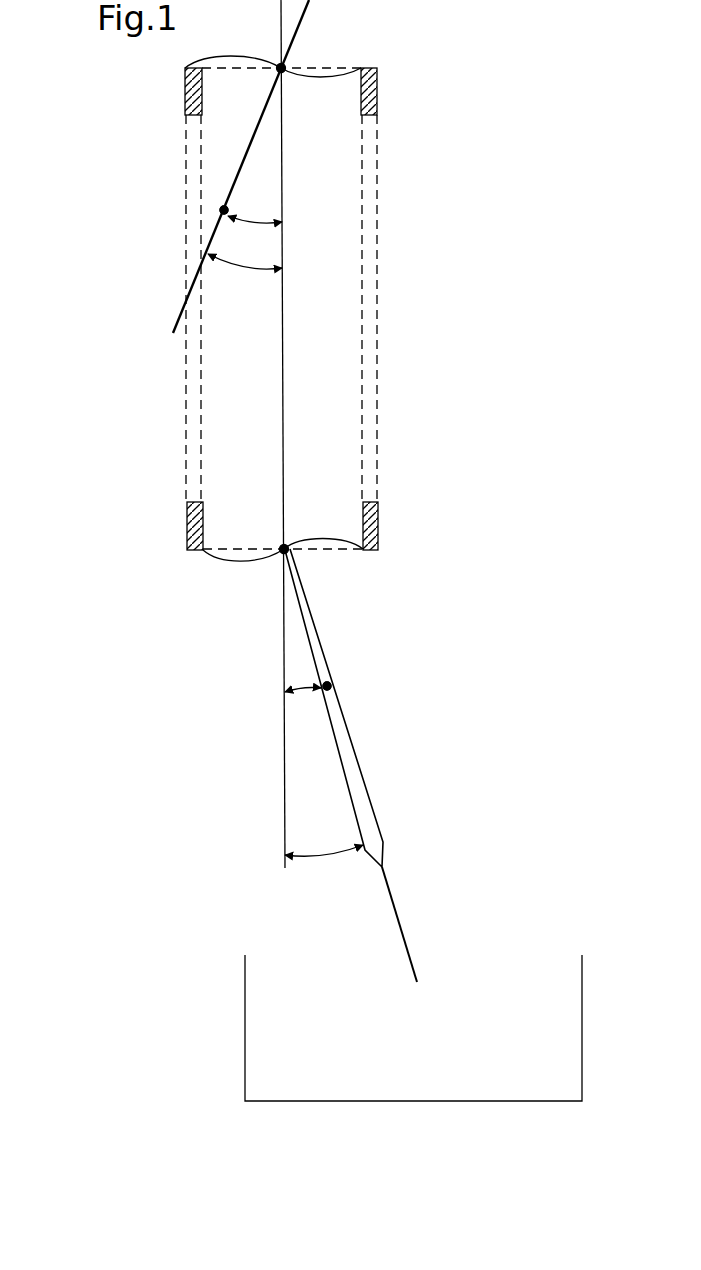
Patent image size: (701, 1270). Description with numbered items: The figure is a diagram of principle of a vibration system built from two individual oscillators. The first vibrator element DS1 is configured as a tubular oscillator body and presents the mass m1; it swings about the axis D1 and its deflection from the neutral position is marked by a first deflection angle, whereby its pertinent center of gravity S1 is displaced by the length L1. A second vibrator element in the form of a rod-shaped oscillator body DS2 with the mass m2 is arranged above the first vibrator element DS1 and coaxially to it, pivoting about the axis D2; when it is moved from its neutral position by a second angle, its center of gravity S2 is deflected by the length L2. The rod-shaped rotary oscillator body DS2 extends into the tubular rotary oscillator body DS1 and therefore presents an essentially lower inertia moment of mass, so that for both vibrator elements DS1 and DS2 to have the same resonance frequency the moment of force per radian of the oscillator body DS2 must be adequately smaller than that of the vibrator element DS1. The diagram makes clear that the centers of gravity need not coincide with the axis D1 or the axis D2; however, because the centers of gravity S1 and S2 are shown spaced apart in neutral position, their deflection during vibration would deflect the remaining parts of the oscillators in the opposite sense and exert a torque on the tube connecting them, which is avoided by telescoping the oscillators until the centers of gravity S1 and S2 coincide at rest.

The axis D1 is at (285, 546).
The axis D2 is at (283, 66).
The vibrator element DS1 is at (378, 522).
The rod-shaped oscillator body DS2 is at (377, 82).
The length L1 is at (351, 765).
The length L2 is at (241, 166).
The center of gravity S1 is at (322, 687).
The center of gravity S2 is at (221, 210).
The mass m1 is at (330, 683).
The mass m2 is at (222, 212).